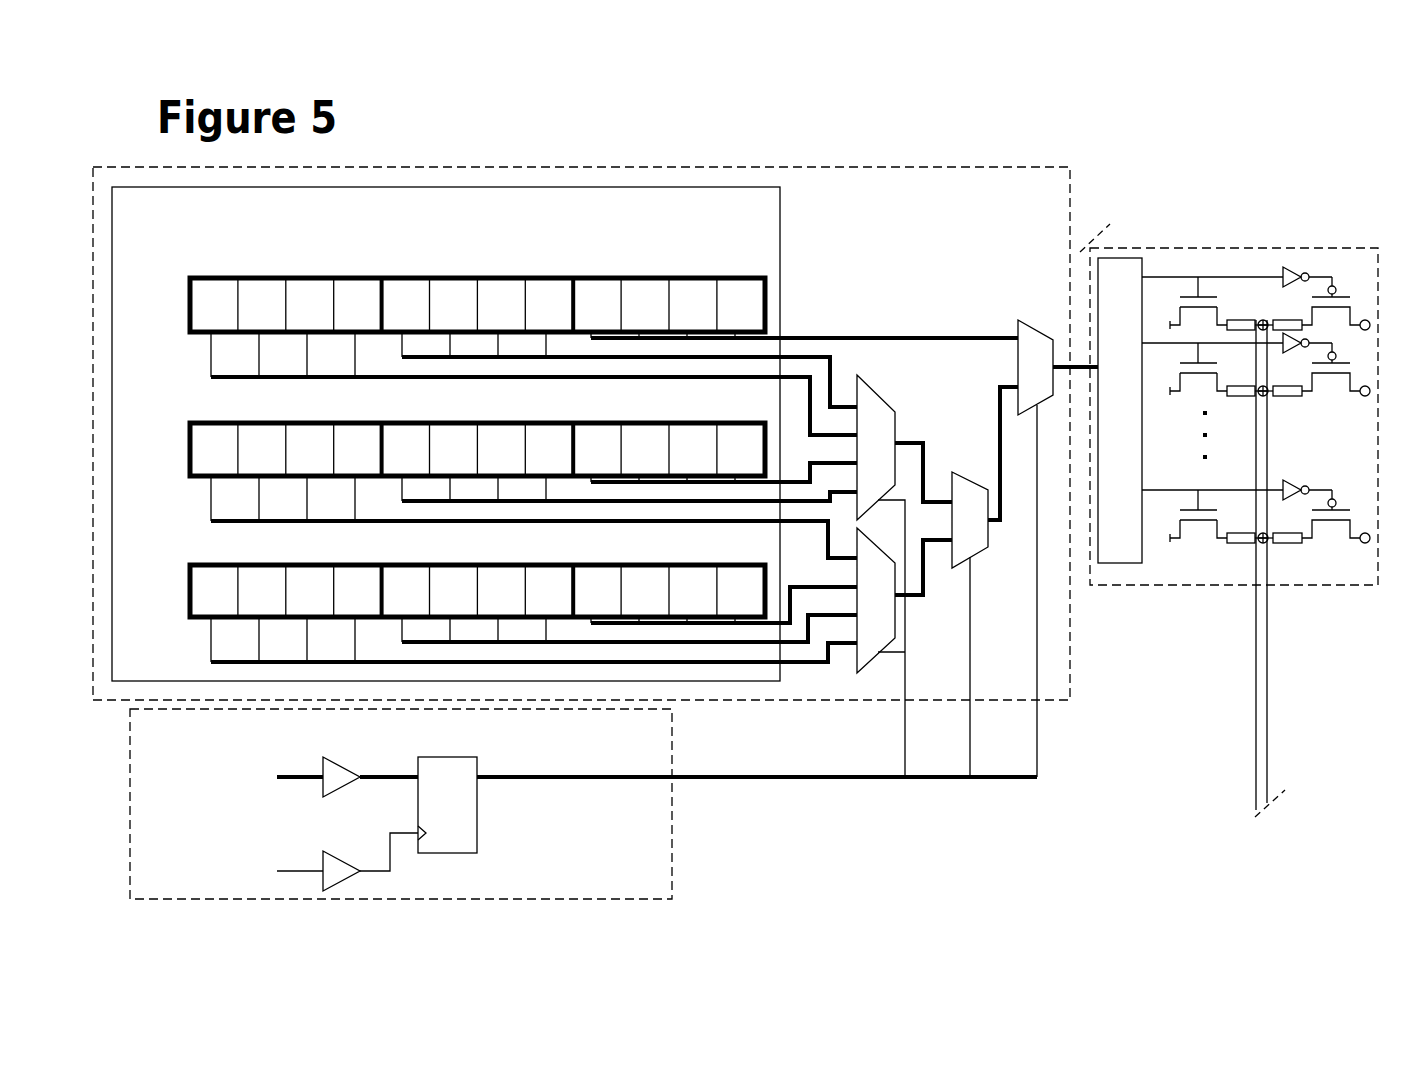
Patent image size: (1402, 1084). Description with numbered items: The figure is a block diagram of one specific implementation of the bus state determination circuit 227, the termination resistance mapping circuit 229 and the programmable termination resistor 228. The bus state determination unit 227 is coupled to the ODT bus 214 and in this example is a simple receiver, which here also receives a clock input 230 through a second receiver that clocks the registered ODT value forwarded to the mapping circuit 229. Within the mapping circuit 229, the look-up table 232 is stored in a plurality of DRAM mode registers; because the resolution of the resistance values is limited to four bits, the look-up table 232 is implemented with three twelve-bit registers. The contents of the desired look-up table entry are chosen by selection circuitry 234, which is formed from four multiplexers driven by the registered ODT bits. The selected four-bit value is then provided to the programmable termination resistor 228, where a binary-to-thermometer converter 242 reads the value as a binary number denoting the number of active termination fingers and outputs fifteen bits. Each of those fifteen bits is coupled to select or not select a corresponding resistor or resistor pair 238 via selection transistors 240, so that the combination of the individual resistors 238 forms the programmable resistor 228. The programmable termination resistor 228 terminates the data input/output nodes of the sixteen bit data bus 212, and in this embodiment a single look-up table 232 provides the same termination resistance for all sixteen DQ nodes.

The data bus 212 is at (1198, 842).
The ODT bus 214 is at (183, 758).
The bus state determination unit 227 is at (672, 836).
The programmable termination resistor 228 is at (1170, 593).
The termination resistance mapping circuit 229 is at (800, 168).
The clock input 230 is at (201, 858).
The look-up table 232 is at (776, 234).
The selection circuitry 234 is at (966, 326).
The resistor 238 is at (1267, 320).
The selection transistor 240 is at (1180, 286).
The binary-to-thermometer converter 242 is at (1101, 565).